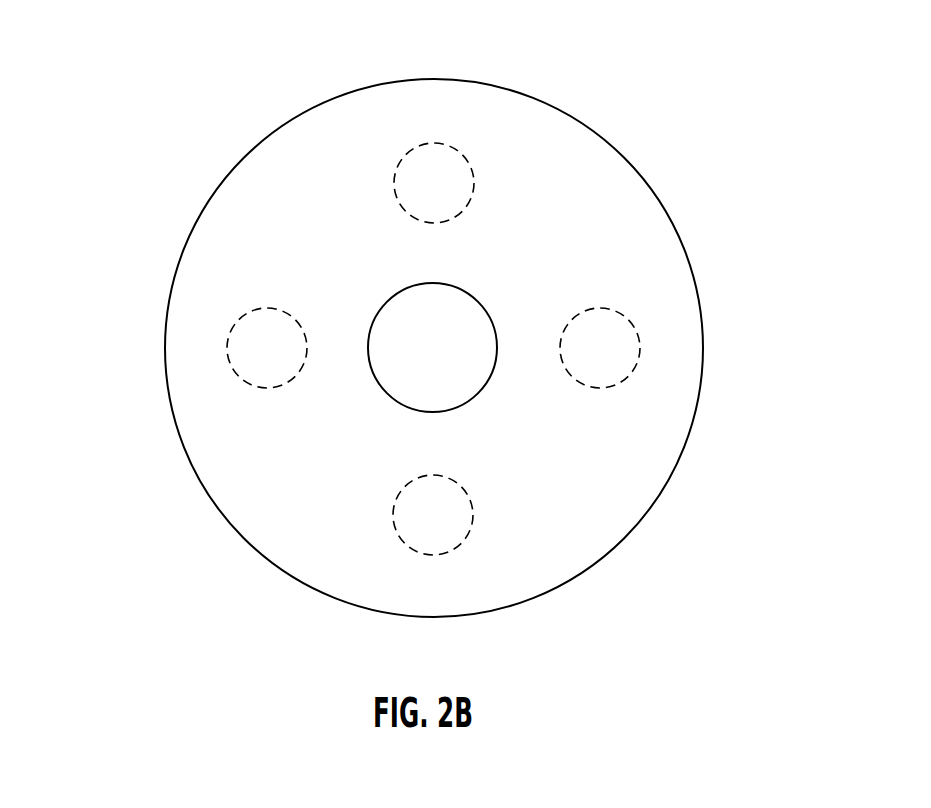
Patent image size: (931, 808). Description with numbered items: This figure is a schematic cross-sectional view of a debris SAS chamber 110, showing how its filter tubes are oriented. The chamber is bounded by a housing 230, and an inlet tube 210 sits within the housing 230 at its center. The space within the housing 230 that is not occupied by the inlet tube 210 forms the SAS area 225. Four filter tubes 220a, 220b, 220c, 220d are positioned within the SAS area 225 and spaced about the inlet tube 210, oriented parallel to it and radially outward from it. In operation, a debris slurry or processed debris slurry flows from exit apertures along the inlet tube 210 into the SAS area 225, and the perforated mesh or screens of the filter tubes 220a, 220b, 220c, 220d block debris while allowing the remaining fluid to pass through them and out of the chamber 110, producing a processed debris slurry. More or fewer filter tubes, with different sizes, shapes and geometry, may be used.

The debris SAS chamber 110 is at (160, 75).
The inlet tube 210 is at (395, 297).
The filter tube 220a is at (443, 143).
The filter tube 220b is at (638, 358).
The filter tube 220c is at (436, 556).
The filter tube 220d is at (228, 352).
The SAS area 225 is at (289, 541).
The housing 230 is at (630, 535).